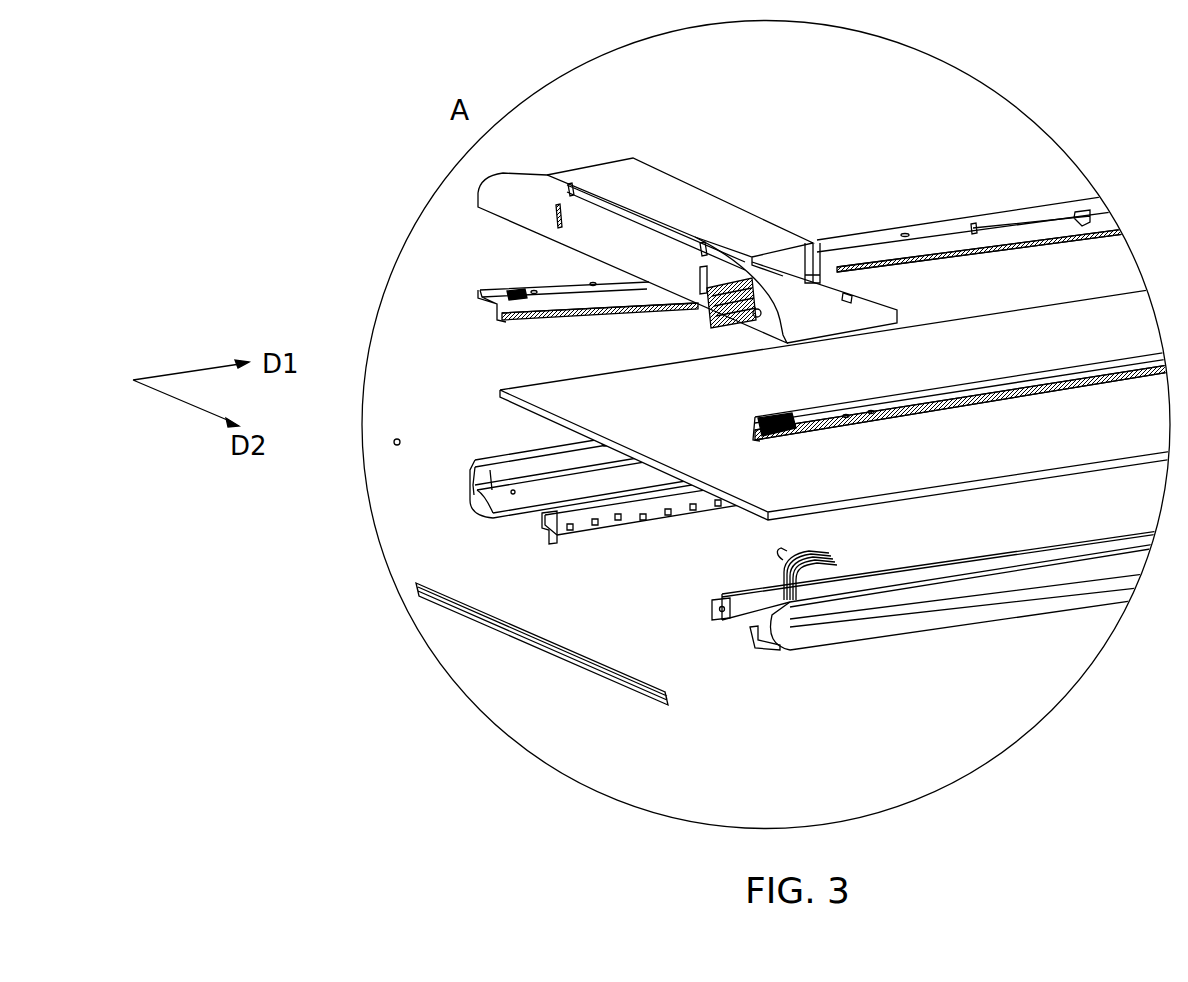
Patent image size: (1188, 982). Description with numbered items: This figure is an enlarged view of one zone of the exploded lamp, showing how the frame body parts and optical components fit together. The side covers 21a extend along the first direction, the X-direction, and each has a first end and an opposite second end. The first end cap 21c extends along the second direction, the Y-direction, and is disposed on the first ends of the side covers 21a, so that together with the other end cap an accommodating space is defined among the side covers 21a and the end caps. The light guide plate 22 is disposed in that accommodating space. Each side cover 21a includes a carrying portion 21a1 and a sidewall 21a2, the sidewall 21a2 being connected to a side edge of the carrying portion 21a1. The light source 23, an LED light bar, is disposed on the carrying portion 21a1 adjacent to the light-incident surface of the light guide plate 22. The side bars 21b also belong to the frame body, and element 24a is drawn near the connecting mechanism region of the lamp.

The side cover 21a is at (493, 455).
The carrying portion 21a1 is at (760, 637).
The sidewall 21a2 is at (837, 620).
The side bar 21b is at (555, 288).
The first end cap 21c is at (520, 187).
The light guide plate 22 is at (920, 472).
The light source 23 is at (605, 522).
The connector 24a is at (738, 308).